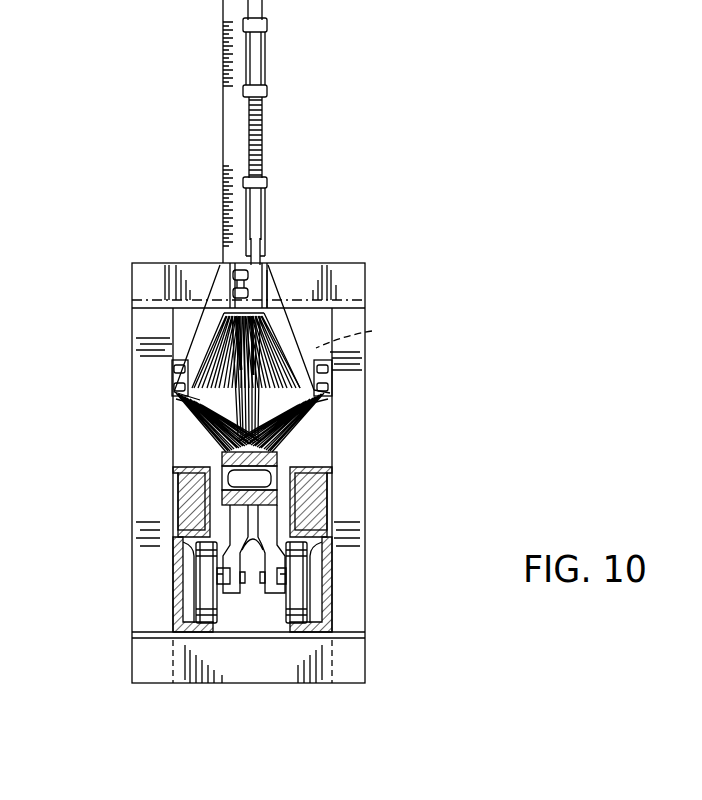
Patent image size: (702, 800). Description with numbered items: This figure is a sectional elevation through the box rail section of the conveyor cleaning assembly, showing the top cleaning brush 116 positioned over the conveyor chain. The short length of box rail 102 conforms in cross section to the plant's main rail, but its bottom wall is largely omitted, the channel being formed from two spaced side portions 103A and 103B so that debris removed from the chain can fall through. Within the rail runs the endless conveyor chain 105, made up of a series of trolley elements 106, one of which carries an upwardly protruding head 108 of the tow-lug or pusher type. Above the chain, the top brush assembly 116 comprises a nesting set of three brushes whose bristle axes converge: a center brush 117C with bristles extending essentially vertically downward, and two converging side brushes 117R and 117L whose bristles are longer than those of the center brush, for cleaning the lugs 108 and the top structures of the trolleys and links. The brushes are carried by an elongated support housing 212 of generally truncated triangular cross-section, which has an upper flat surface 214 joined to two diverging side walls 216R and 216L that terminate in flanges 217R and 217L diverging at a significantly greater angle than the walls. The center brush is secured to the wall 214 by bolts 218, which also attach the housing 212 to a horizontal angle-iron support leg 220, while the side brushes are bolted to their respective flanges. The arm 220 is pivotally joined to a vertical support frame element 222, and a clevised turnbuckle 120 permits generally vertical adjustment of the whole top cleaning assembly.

The box rail 102 is at (168, 568).
The side portion 103A is at (333, 596).
The side portion 103B is at (176, 595).
The conveyor chain 105 is at (230, 517).
The trolley element 106 is at (238, 608).
The head 108 is at (372, 334).
The top cleaning brush 116 is at (268, 272).
The center brush 117C is at (272, 347).
The left side brush 117L is at (190, 445).
The right side brush 117R is at (310, 445).
The clevised turnbuckle 120 is at (264, 124).
The support housing 212 is at (218, 320).
The upper flat surface 214 is at (278, 281).
The left side wall 216L is at (208, 356).
The right side wall 216R is at (270, 312).
The left flange 217L is at (182, 384).
The right flange 217R is at (332, 386).
The bolt 218 is at (208, 288).
The angle-iron support leg 220 is at (180, 366).
The vertical support frame element 222 is at (228, 60).